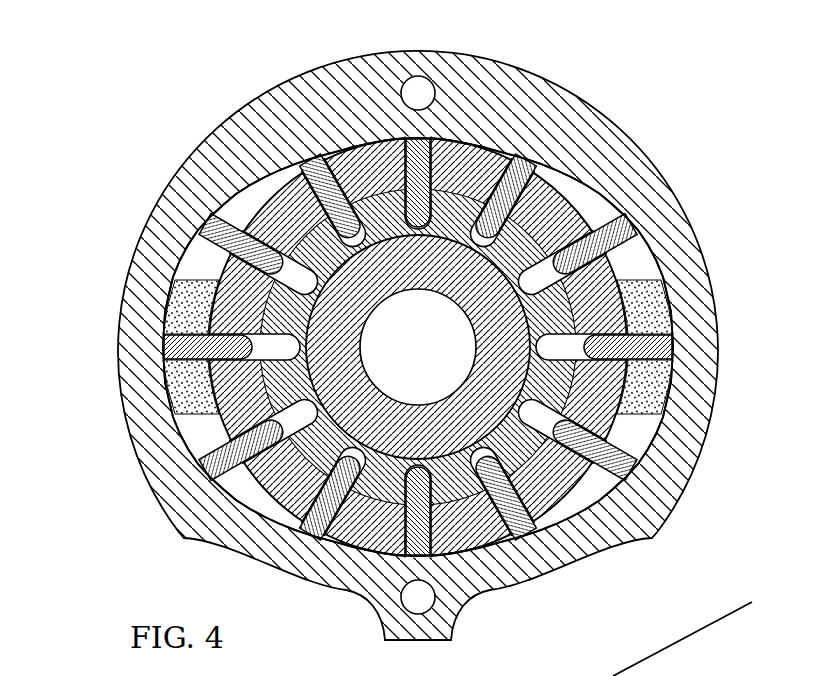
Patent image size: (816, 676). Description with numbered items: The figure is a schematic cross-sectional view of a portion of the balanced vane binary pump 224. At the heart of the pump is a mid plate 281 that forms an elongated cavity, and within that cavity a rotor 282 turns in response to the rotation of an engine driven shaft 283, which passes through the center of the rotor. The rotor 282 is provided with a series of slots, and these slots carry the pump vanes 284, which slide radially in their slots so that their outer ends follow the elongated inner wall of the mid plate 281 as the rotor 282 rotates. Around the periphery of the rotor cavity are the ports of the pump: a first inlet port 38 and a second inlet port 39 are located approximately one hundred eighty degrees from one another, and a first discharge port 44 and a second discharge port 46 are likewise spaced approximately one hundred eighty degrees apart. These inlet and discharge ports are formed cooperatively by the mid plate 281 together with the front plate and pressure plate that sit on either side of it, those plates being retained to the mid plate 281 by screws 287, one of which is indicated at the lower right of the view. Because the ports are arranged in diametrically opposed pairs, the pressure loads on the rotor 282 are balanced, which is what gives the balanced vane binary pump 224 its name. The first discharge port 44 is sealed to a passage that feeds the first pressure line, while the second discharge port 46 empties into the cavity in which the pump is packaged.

The balanced vane binary pump 224 is at (432, 337).
The mid plate 281 is at (542, 92).
The rotor 282 is at (266, 207).
The engine driven shaft 283 is at (258, 363).
The pump vanes 284 is at (636, 220).
The first discharge port 44 is at (200, 264).
The second inlet port 39 is at (645, 268).
The first inlet port 38 is at (200, 430).
The second discharge port 46 is at (635, 427).
The screws 287 is at (697, 639).